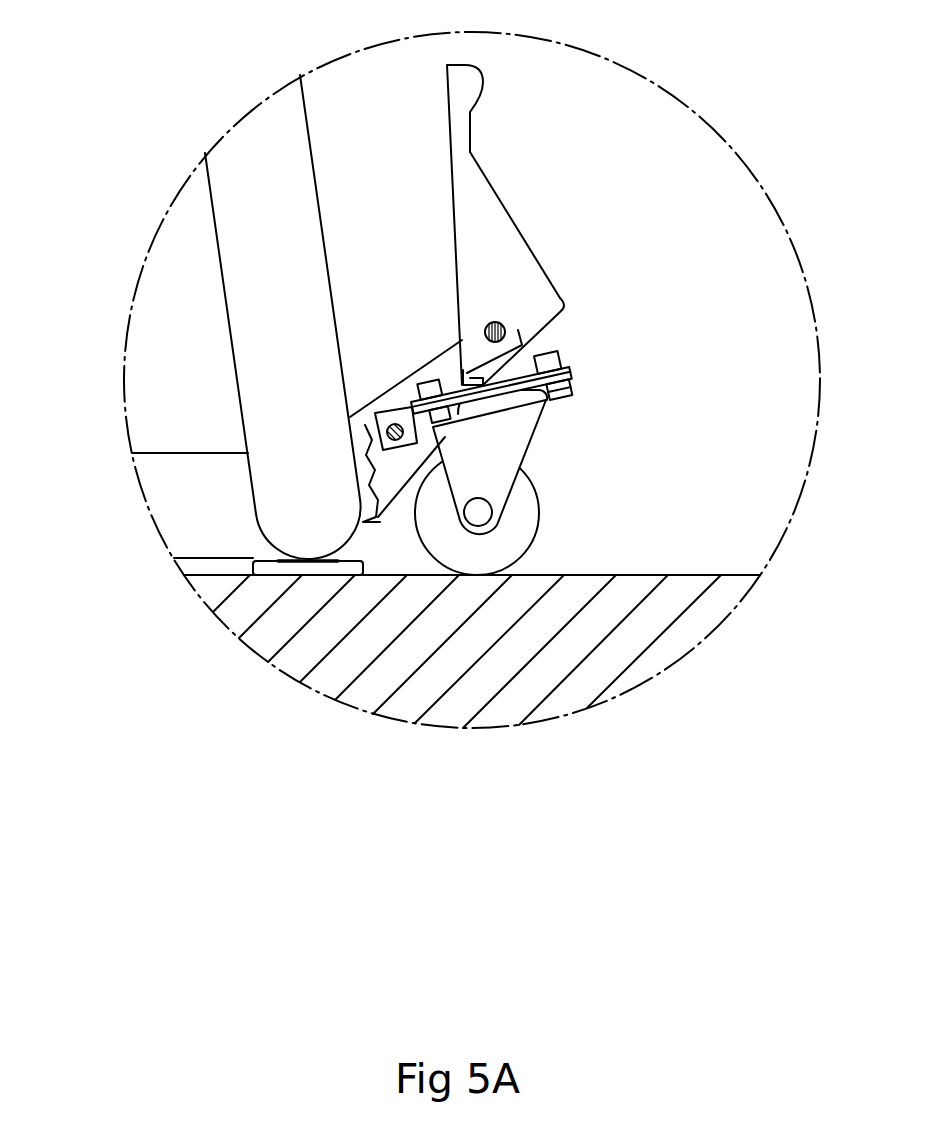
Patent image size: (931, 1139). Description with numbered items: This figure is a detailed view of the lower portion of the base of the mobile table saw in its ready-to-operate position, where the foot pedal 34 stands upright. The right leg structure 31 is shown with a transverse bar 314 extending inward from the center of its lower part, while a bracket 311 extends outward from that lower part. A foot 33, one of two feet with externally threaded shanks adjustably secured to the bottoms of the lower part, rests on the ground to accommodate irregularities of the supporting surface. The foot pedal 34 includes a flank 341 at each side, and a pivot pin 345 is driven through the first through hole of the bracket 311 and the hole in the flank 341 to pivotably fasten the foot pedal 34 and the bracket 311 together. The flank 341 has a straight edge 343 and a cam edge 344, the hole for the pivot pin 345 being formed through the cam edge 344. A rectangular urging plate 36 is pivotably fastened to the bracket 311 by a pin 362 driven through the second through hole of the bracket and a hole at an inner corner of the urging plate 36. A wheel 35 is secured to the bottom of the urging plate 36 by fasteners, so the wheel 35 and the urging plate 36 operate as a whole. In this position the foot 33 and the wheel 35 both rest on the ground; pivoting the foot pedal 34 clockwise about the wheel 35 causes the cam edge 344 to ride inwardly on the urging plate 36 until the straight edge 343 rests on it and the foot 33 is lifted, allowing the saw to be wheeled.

The right leg structure 31 is at (267, 188).
The bracket 311 is at (443, 372).
The transverse bar 314 is at (215, 513).
The foot 33 is at (313, 563).
The foot pedal 34 is at (555, 187).
The flank 341 is at (492, 238).
The straight edge 343 is at (535, 250).
The cam edge 344 is at (563, 303).
The pivot pin 345 is at (493, 322).
The wheel 35 is at (520, 517).
The urging plate 36 is at (570, 366).
The pin 362 is at (393, 430).